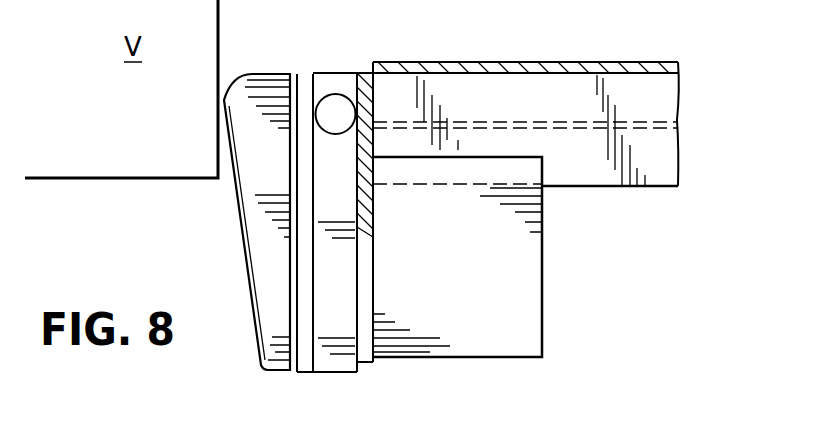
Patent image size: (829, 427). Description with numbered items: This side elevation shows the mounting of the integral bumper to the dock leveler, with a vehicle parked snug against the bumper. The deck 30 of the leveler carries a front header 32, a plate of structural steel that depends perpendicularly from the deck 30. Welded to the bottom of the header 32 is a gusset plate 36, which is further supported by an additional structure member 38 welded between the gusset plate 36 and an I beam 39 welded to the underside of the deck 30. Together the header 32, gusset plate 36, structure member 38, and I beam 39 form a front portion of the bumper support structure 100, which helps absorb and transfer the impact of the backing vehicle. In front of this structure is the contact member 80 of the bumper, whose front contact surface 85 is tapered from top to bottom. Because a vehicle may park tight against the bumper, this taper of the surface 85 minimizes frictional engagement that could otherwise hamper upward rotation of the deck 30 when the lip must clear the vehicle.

The deck 30 is at (513, 57).
The front header 32 is at (367, 85).
The gusset plate 36 is at (365, 323).
The structure member 38 is at (543, 315).
The I beam 39 is at (662, 102).
The contact member 80 is at (270, 87).
The contact surface 85 is at (240, 232).
The bumper support structure 100 is at (562, 209).